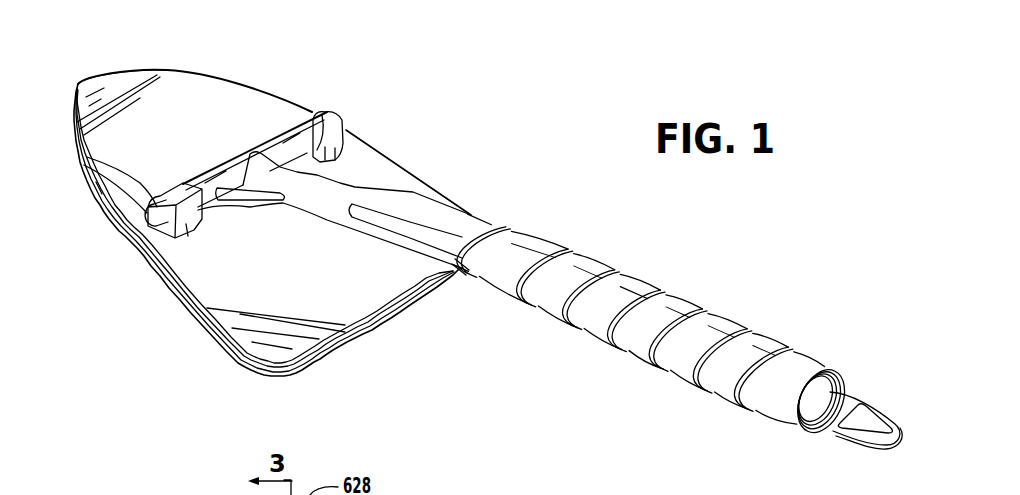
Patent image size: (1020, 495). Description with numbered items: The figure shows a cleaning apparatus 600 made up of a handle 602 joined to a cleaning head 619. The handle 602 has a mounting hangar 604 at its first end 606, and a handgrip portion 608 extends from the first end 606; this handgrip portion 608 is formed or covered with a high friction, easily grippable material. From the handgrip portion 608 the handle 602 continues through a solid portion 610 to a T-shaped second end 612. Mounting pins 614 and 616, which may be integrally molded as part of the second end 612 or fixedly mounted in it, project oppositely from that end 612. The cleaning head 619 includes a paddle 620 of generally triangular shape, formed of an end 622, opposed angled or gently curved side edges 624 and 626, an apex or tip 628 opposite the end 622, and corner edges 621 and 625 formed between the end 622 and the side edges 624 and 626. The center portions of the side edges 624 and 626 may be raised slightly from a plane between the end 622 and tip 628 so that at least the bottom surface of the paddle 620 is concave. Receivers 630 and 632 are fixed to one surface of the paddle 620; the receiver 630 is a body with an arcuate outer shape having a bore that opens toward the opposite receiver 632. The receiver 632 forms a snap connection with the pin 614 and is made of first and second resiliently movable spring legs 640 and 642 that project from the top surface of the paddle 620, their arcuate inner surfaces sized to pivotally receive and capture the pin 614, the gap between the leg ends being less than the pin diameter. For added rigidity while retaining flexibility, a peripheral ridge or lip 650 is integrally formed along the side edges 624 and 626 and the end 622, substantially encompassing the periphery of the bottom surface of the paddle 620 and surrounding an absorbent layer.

The cleaning apparatus 600 is at (527, 124).
The handle 602 is at (705, 290).
The mounting hangar 604 is at (880, 402).
The first end 606 is at (820, 441).
The handgrip portion 608 is at (632, 334).
The solid portion 610 is at (478, 215).
The T-shaped second end 612 is at (287, 140).
The mounting pin 614 is at (97, 184).
The mounting pin 616 is at (338, 120).
The cleaning head 619 is at (127, 63).
The paddle 620 is at (210, 97).
The corner edge 621 is at (267, 364).
The end 622 is at (397, 330).
The side edge 624 is at (125, 227).
The corner edge 625 is at (460, 270).
The side edge 626 is at (412, 168).
The apex or tip 628 is at (79, 82).
The receiver 630 is at (312, 103).
The receiver 632 is at (161, 186).
The spring leg 640 is at (87, 157).
The spring leg 642 is at (181, 230).
The peripheral ridge or lip 650 is at (357, 343).